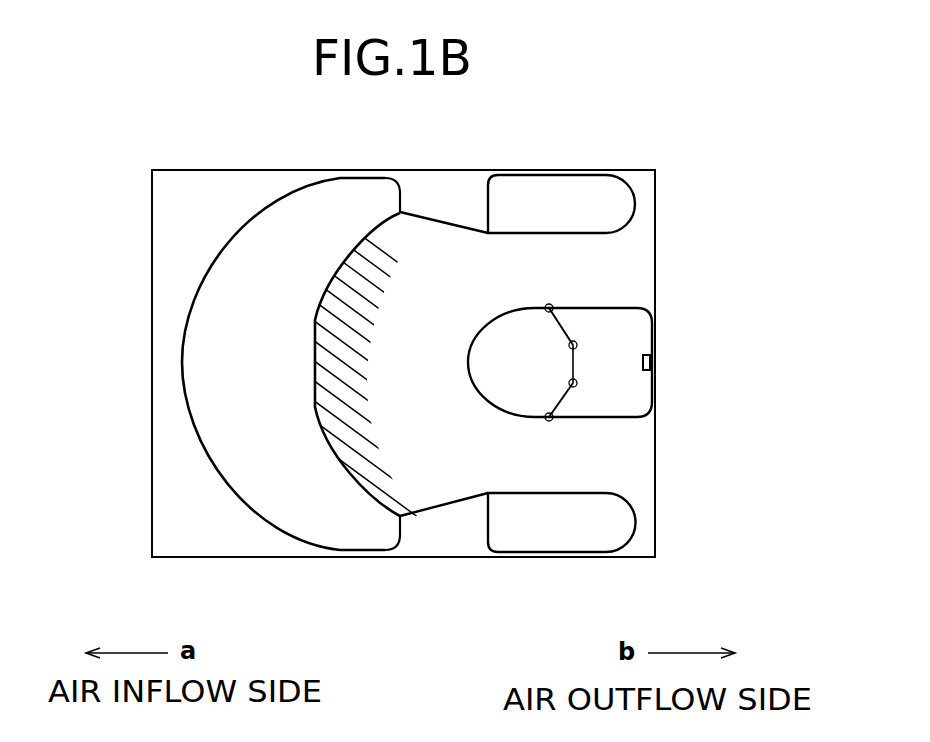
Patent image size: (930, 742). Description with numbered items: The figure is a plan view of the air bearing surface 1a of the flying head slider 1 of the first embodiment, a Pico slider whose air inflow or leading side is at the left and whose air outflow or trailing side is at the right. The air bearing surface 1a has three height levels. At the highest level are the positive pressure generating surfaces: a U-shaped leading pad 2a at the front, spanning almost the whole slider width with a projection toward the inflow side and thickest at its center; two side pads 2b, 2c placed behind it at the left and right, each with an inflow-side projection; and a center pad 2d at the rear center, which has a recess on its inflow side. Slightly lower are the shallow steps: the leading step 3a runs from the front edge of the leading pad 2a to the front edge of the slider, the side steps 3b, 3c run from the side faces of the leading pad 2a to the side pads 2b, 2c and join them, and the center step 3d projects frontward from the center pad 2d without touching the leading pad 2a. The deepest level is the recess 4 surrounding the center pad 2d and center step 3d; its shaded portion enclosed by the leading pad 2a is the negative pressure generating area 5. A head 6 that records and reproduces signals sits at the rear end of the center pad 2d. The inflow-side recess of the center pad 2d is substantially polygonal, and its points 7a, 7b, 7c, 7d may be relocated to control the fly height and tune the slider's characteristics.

The flying head slider 1 is at (297, 565).
The air bearing surface 1a is at (192, 188).
The leading pad 2a is at (315, 198).
The side pad 2b is at (537, 190).
The side pad 2c is at (568, 534).
The center pad 2d is at (640, 390).
The leading step 3a is at (183, 543).
The side step 3b is at (448, 185).
The side step 3c is at (447, 541).
The center step 3d is at (512, 330).
The recess 4 is at (637, 240).
The negative pressure generating area 5 is at (390, 348).
The head 6 is at (651, 360).
The point 7a is at (553, 306).
The point 7b is at (577, 345).
The point 7c is at (577, 383).
The point 7d is at (553, 421).